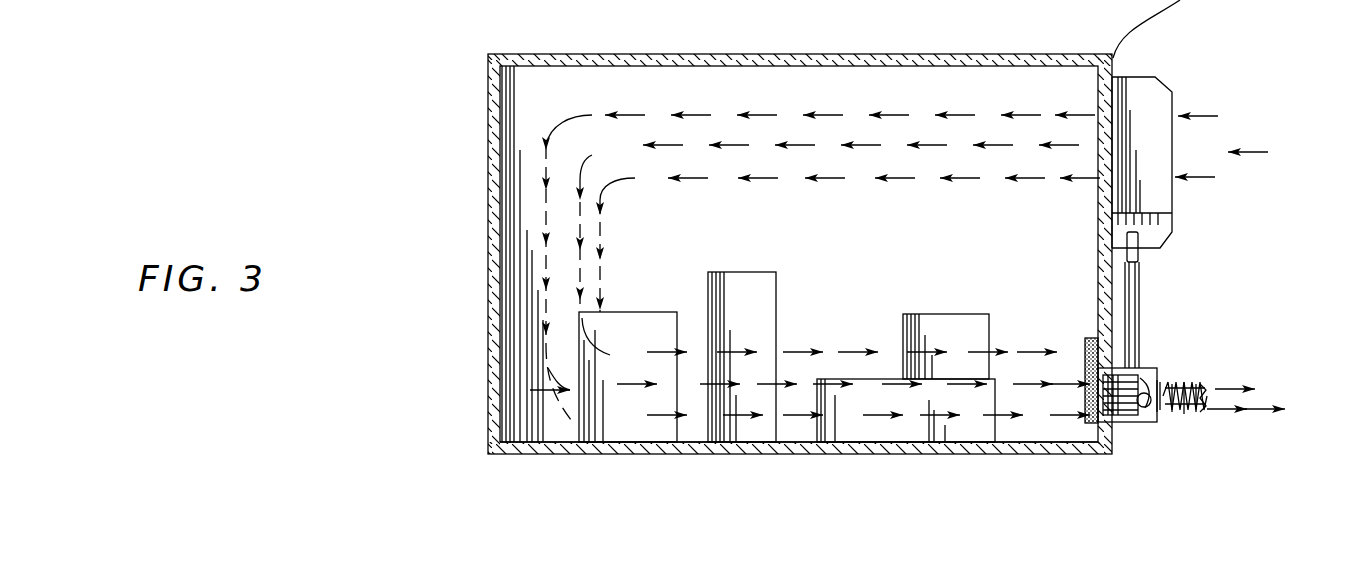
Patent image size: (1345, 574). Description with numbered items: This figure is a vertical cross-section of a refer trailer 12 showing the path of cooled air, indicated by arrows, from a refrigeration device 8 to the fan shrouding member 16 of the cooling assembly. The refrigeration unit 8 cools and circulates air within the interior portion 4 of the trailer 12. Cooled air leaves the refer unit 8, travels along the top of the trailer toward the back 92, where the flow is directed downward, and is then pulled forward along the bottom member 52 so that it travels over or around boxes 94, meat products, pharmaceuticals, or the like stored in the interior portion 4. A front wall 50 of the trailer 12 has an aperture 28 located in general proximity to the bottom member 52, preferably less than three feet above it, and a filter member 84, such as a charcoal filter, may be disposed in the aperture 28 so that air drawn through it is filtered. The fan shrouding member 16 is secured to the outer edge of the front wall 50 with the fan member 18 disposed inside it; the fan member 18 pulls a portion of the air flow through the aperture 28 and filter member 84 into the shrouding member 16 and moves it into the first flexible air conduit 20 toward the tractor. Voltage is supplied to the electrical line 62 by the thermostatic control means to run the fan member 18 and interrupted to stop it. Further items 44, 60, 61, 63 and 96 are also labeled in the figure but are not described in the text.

The interior portion 4 is at (845, 315).
The refrigeration device 8 is at (1142, 115).
The refer trailer 12 is at (818, 140).
The fan shrouding member 16 is at (1160, 370).
The fan member 18 is at (1138, 378).
The first flexible air conduit 20 is at (1200, 418).
The aperture 28 is at (1086, 402).
The valve 44 is at (1160, 424).
The front wall 50 is at (1122, 80).
The bottom member 52 is at (795, 456).
The supply tube 60 is at (1125, 283).
The line 61 is at (1137, 318).
The electrical line 62 is at (1180, 424).
The line 63 is at (1137, 292).
The filter member 84 is at (1087, 358).
The back 92 is at (496, 258).
The boxes 94 is at (670, 325).
The insulated container 96 is at (906, 62).